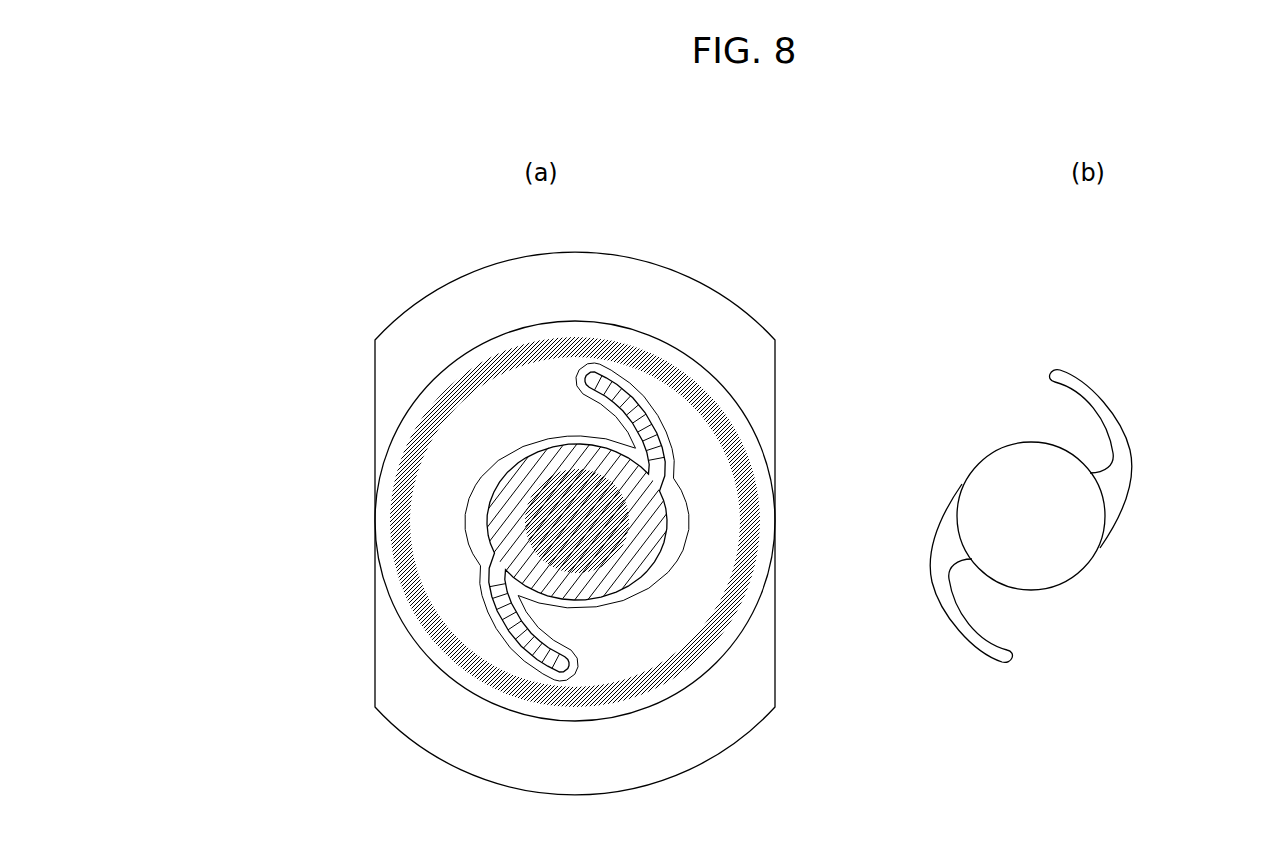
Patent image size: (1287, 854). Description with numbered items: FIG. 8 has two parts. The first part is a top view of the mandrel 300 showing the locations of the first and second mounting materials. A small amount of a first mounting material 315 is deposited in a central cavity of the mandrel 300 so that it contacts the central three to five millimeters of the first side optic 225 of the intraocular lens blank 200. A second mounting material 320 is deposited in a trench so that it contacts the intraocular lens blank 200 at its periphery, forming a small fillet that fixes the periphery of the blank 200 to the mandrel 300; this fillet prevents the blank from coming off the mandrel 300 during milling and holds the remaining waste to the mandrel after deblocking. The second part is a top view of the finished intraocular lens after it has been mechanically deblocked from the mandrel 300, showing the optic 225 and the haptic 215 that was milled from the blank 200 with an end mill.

The mandrel 300 is at (459, 256).
The intraocular lens blank 200 is at (722, 559).
The first mounting material 315 is at (532, 518).
The second mounting material 320 is at (423, 592).
The haptic 215 is at (1115, 425).
The first side optic 225 is at (1067, 540).